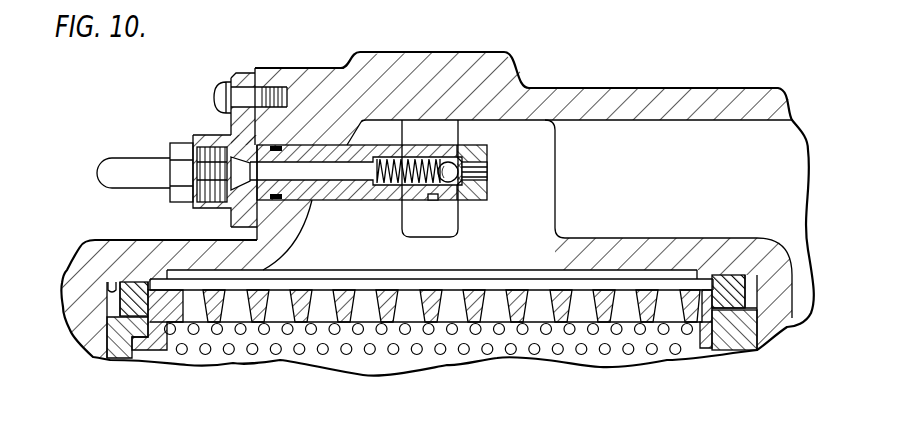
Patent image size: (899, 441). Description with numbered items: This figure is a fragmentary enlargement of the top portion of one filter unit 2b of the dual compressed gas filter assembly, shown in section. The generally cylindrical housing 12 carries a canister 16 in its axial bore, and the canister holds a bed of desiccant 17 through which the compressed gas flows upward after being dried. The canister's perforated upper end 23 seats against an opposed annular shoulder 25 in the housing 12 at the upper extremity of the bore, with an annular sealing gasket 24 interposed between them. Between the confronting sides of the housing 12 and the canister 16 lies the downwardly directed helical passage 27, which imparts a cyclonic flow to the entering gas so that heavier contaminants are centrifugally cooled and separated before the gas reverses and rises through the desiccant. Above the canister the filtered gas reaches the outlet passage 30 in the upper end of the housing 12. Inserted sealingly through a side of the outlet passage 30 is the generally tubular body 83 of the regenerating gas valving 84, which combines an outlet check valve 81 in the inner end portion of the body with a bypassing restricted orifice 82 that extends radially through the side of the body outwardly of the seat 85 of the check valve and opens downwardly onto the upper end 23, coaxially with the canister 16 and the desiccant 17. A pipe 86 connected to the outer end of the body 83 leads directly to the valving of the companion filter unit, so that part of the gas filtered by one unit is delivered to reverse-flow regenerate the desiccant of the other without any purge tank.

The filter unit 2b is at (616, 80).
The housing 12 is at (481, 52).
The canister 16 is at (100, 358).
The desiccant 17 is at (494, 322).
The perforated upper end 23 is at (433, 290).
The annular sealing gasket 24 is at (118, 302).
The annular shoulder 25 is at (111, 284).
The helical passage 27 is at (90, 338).
The outlet passage 30 is at (631, 195).
The outlet check valve 81 is at (448, 152).
The restricted orifice 82 is at (434, 200).
The tubular body 83 is at (358, 201).
The regenerating gas valving 84 is at (344, 206).
The seat 85 is at (466, 172).
The pipe 86 is at (140, 157).